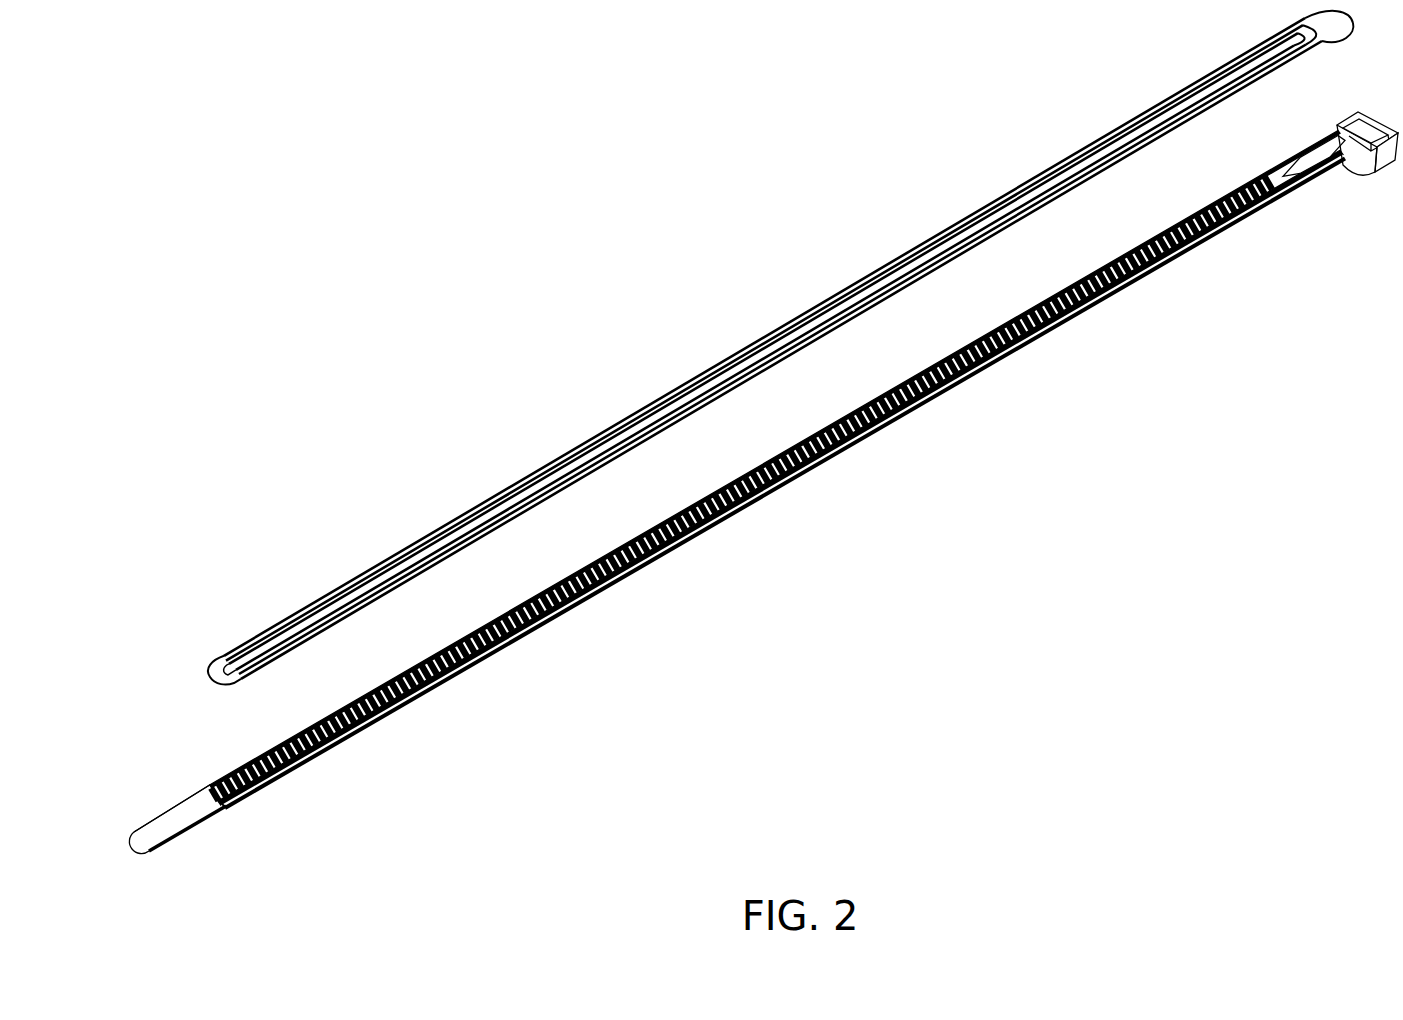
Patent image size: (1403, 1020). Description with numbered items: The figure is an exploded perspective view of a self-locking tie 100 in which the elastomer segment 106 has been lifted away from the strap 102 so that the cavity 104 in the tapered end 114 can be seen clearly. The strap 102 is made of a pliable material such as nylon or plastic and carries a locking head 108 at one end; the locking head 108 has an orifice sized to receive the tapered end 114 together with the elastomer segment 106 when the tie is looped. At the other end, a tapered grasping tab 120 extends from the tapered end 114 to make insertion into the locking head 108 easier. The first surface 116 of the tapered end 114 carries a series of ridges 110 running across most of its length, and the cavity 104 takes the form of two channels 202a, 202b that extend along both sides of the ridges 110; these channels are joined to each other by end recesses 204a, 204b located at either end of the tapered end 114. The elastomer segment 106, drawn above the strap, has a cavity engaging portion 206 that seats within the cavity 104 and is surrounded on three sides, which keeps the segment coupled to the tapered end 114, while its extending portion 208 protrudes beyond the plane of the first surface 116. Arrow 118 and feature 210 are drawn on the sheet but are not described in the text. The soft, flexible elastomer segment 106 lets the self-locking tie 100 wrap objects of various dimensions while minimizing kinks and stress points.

The self-locking tie 100 is at (482, 163).
The strap 102 is at (877, 442).
The cavity 104 is at (1342, 180).
The elastomer segment 106 is at (812, 309).
The locking head 108 is at (1380, 182).
The series of ridges 110 is at (753, 506).
The tapered end 114 is at (207, 793).
The first surface 116 is at (178, 815).
The toothed channel 118 is at (518, 656).
The tapered grasping tab 120 is at (228, 806).
The channel 202a is at (1045, 324).
The channel 202b is at (1092, 307).
The end recess 204a is at (1322, 180).
The end recess 204b is at (226, 802).
The cavity engaging portion 206 is at (372, 702).
The extending portion 208 is at (267, 630).
The strap surface 210 is at (986, 370).